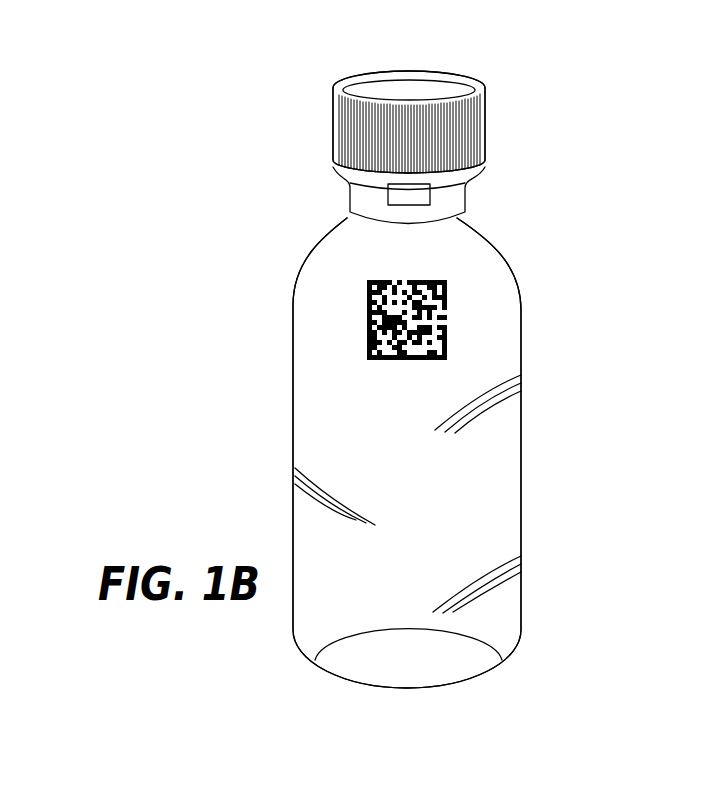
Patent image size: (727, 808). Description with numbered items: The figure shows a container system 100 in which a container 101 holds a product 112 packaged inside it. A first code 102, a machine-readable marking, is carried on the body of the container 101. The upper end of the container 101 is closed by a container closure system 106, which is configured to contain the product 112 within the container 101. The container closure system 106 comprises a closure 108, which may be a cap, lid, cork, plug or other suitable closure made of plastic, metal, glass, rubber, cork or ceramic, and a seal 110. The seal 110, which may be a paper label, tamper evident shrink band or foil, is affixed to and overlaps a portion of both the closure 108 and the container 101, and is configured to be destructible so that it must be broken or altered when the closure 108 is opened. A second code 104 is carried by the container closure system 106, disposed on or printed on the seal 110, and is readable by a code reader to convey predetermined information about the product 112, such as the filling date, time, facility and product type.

The container system 100 is at (178, 371).
The container 101 is at (467, 478).
The first code 102 is at (448, 325).
The second code 104 is at (408, 197).
The container closure system 106 is at (287, 172).
The closure 108 is at (415, 93).
The seal 110 is at (333, 110).
The product 112 is at (313, 427).